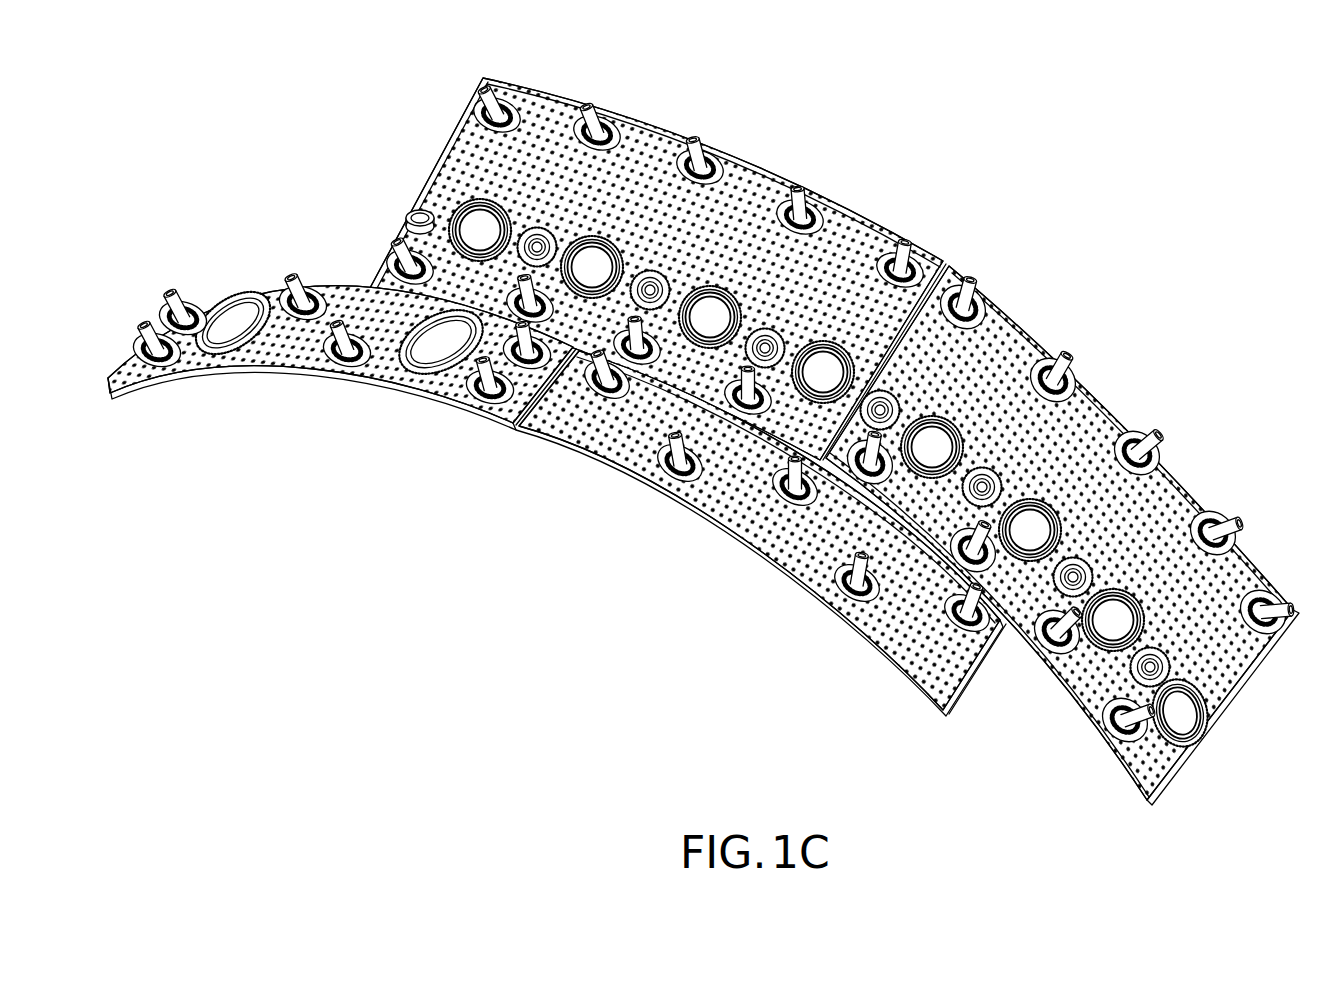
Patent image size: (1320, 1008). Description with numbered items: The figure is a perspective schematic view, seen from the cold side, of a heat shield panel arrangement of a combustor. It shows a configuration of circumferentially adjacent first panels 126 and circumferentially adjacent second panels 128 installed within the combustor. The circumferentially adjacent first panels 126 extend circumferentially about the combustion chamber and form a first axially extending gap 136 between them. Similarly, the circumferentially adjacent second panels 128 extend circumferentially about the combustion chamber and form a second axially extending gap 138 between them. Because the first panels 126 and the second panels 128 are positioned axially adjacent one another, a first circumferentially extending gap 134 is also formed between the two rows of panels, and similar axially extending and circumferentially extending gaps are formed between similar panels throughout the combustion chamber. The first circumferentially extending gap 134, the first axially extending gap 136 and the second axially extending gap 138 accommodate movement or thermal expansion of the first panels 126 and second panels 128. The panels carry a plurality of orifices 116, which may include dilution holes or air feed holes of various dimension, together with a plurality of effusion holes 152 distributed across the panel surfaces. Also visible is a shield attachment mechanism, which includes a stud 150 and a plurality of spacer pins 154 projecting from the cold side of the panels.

The orifices 116 is at (1110, 628).
The circumferentially adjacent first panels 126 is at (273, 368).
The circumferentially adjacent second panels 128 is at (734, 148).
The first circumferentially extending gap 134 is at (368, 282).
The first axially extending gap 136 is at (513, 425).
The second axially extending gap 138 is at (949, 266).
The stud 150 is at (880, 560).
The effusion holes 152 is at (925, 637).
The spacer pins 154 is at (853, 600).